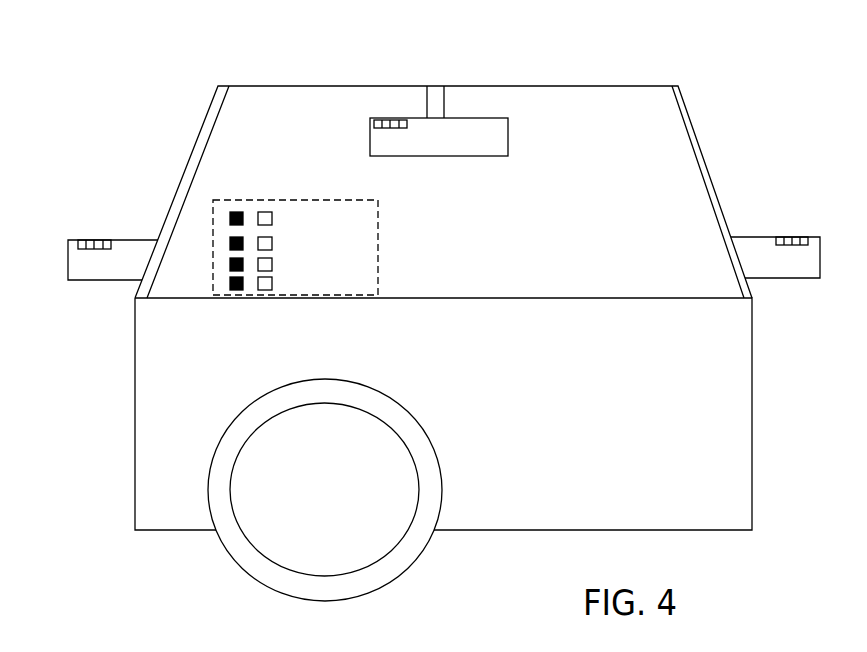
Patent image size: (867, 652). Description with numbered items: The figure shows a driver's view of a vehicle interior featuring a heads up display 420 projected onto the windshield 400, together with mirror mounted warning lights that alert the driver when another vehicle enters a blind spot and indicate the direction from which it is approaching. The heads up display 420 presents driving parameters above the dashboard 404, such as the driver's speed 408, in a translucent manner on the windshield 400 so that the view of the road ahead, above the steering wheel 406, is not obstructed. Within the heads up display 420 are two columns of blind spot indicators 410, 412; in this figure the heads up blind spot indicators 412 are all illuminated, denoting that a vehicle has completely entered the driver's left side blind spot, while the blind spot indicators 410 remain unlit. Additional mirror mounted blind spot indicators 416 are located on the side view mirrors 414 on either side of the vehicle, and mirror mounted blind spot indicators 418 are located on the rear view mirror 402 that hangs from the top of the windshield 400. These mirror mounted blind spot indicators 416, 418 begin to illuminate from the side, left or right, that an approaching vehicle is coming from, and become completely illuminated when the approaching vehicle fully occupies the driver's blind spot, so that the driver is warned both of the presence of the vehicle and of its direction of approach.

The windshield 400 is at (648, 115).
The rear view mirror 402 is at (508, 132).
The dashboard 404 is at (752, 427).
The steering wheel 406 is at (229, 553).
The speed 408 is at (298, 252).
The blind spot indicators 410 is at (257, 212).
The heads up blind spot indicators 412 is at (230, 208).
The side view mirrors 414 is at (143, 240).
The mirror mounted blind spot indicators 416 is at (97, 239).
The mirror mounted blind spot indicators 418 is at (379, 119).
The heads up display 420 is at (378, 223).